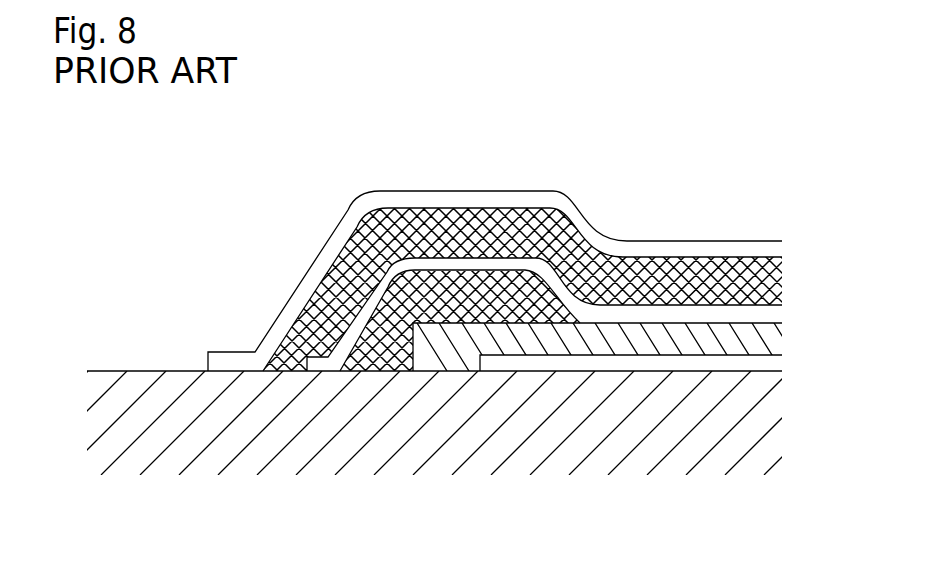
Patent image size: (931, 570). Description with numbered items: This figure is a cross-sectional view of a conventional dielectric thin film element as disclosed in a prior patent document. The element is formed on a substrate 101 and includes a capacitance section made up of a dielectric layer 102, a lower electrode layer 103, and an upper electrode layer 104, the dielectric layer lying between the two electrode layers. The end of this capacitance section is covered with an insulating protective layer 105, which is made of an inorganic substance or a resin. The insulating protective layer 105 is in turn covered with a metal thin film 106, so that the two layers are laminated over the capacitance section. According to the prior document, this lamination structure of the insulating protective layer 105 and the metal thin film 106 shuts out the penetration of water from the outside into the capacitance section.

The substrate 101 is at (166, 396).
The dielectric layer 102 is at (720, 332).
The lower electrode layer 103 is at (550, 362).
The upper electrode layer 104 is at (698, 313).
The insulating protective layer 105 is at (672, 268).
The metal thin film 106 is at (486, 191).